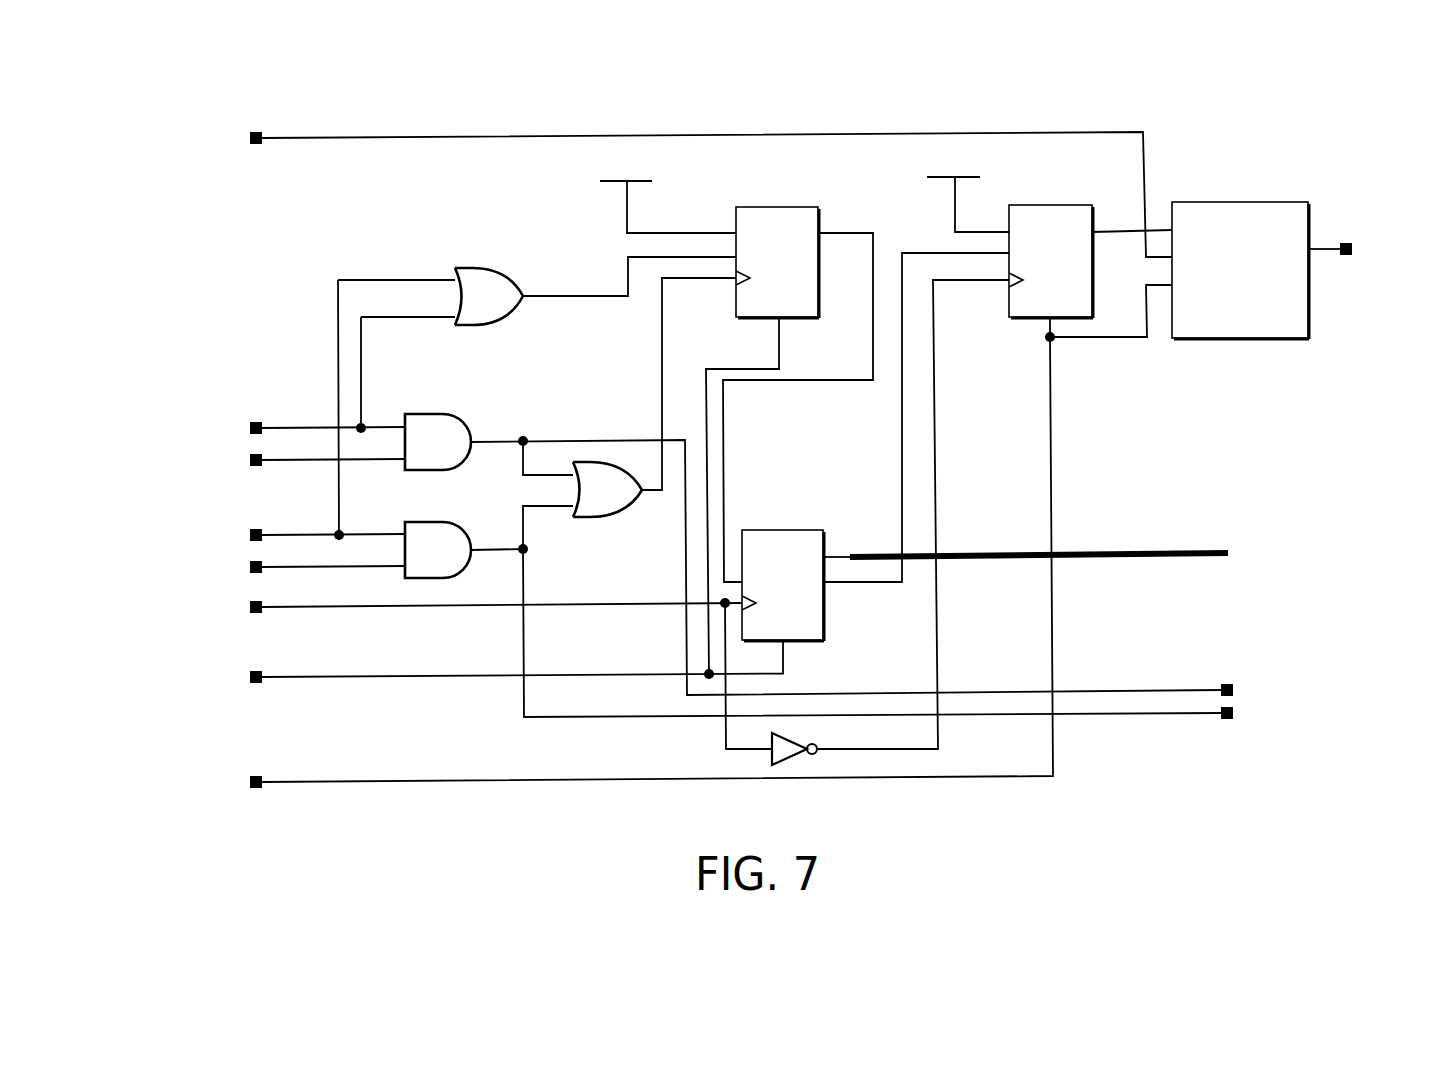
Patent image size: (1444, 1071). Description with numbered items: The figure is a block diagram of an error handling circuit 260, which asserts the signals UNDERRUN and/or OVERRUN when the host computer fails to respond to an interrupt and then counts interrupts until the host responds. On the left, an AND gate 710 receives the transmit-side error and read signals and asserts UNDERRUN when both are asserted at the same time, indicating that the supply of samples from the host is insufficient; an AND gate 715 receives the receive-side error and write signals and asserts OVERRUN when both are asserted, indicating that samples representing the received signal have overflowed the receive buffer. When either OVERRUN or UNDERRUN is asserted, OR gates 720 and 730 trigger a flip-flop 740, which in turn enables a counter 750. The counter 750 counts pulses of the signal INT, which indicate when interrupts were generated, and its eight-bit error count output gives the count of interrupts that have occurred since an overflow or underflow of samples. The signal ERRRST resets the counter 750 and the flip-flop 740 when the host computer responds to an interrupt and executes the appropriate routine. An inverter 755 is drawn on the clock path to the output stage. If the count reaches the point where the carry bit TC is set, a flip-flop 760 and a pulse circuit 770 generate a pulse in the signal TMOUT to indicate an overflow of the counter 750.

The error handling circuit 260 is at (300, 78).
The AND gate 710 is at (440, 523).
The AND gate 715 is at (424, 415).
The OR gate 720 is at (598, 517).
The OR gate 730 is at (478, 268).
The flip-flop 740 is at (780, 207).
The counter 750 is at (785, 530).
The inverter 755 is at (793, 742).
The flip-flop 760 is at (1052, 205).
The pulse circuit 770 is at (1242, 202).